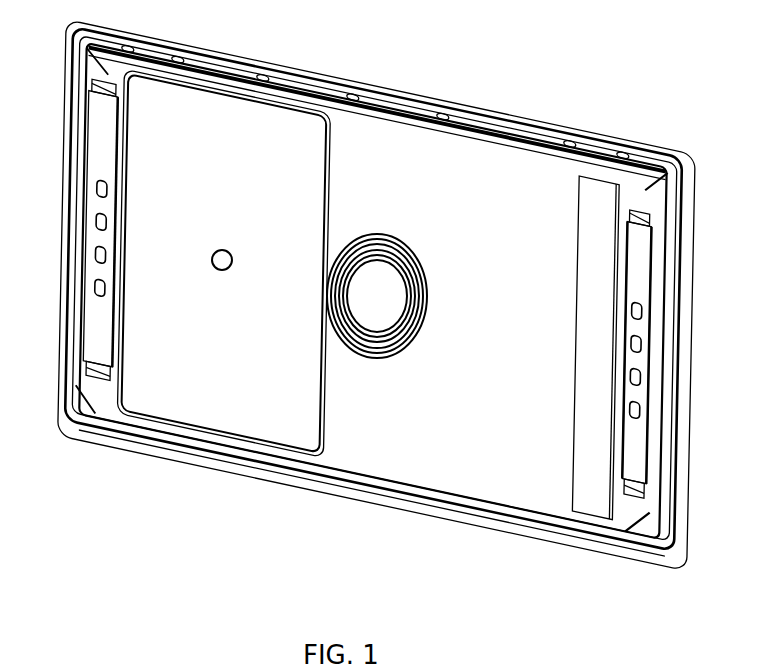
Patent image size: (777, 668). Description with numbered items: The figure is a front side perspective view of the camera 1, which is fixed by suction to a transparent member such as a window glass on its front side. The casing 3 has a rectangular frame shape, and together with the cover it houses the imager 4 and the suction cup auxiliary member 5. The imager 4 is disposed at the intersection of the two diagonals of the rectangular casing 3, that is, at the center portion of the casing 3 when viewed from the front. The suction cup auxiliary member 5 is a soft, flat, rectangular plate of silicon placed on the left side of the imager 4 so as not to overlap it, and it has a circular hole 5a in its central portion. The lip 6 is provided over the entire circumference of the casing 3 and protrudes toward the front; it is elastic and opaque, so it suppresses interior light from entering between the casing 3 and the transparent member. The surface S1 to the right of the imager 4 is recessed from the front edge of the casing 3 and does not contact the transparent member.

The camera 1 is at (406, 45).
The casing 3 is at (607, 142).
The imager 4 is at (375, 295).
The suction cup auxiliary member 5 is at (180, 375).
The hole 5a is at (222, 275).
The lip 6 is at (510, 120).
The substrate surface S1 is at (493, 338).